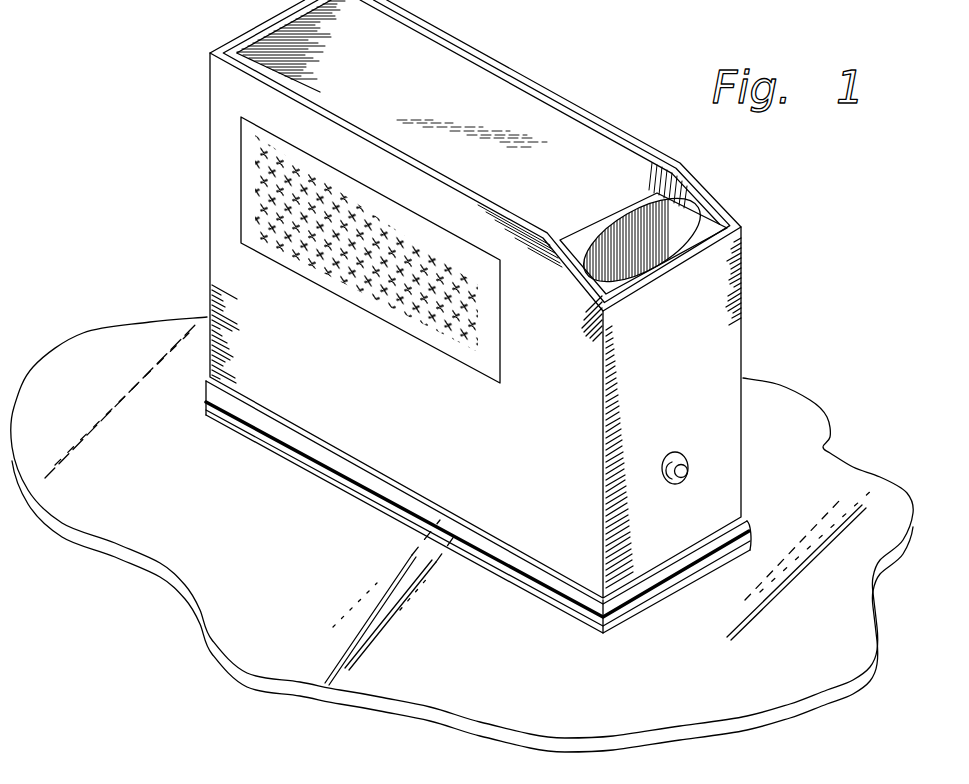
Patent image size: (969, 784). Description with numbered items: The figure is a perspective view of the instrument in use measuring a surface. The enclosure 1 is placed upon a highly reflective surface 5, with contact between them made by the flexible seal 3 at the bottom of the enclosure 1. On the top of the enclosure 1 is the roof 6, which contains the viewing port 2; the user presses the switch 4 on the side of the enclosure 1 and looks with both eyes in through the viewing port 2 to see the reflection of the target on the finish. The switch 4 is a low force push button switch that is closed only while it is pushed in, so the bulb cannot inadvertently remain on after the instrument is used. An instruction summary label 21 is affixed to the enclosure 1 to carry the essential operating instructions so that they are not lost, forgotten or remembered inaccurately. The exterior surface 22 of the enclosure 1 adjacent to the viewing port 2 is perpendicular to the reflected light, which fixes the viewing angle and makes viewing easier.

The enclosure 1 is at (232, 210).
The viewing port 2 is at (654, 247).
The flexible seal 3 is at (240, 434).
The switch 4 is at (690, 470).
The highly reflective surface 5 is at (553, 697).
The roof 6 is at (433, 70).
The instruction summary label 21 is at (240, 143).
The exterior surface 22 is at (594, 294).